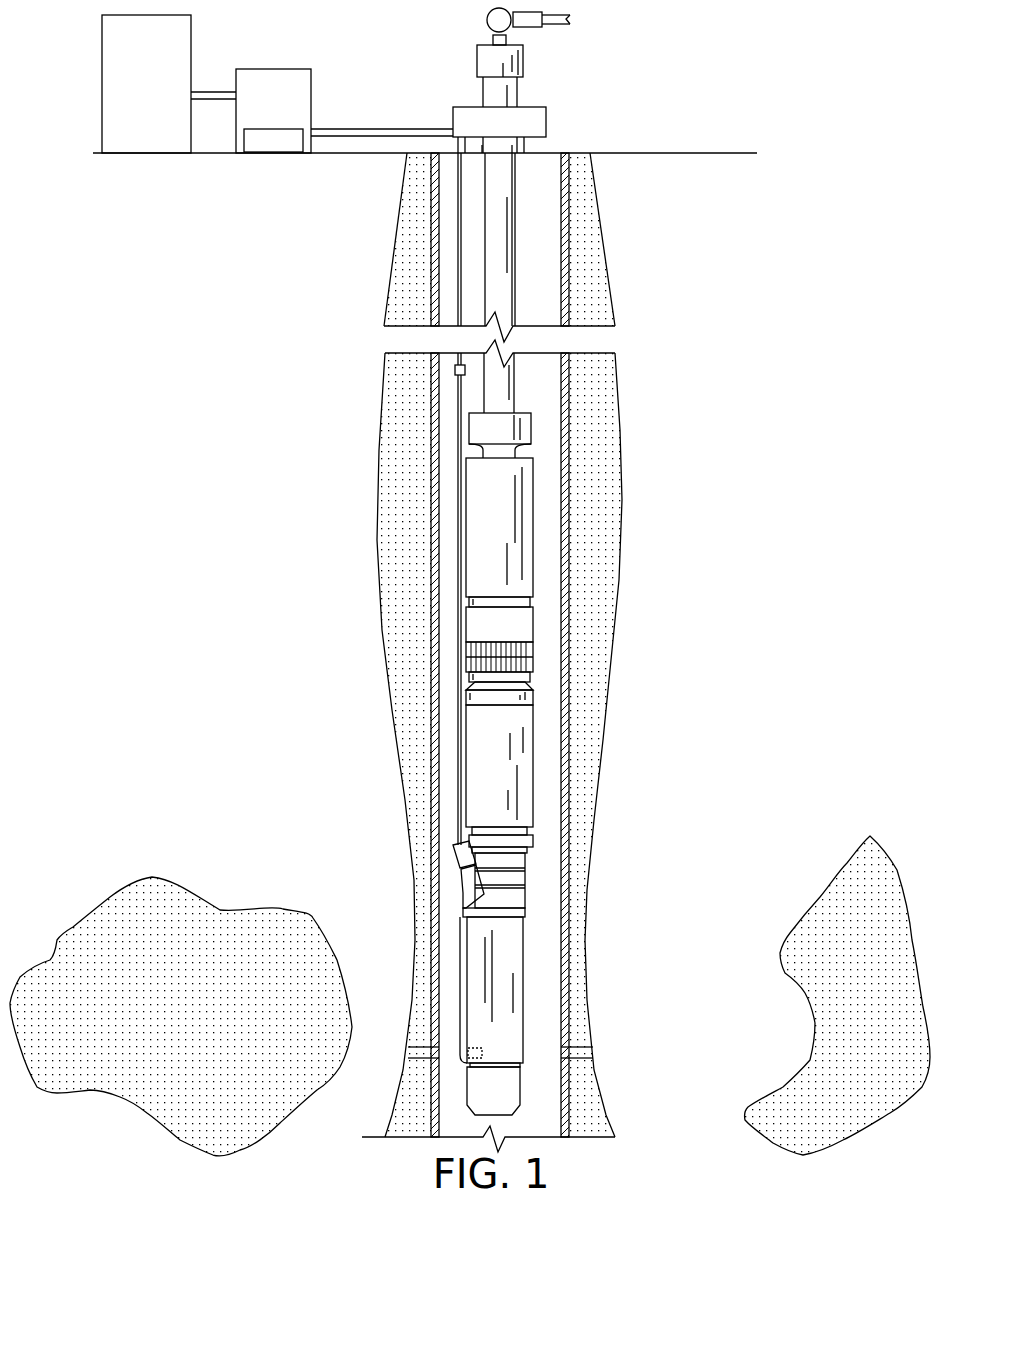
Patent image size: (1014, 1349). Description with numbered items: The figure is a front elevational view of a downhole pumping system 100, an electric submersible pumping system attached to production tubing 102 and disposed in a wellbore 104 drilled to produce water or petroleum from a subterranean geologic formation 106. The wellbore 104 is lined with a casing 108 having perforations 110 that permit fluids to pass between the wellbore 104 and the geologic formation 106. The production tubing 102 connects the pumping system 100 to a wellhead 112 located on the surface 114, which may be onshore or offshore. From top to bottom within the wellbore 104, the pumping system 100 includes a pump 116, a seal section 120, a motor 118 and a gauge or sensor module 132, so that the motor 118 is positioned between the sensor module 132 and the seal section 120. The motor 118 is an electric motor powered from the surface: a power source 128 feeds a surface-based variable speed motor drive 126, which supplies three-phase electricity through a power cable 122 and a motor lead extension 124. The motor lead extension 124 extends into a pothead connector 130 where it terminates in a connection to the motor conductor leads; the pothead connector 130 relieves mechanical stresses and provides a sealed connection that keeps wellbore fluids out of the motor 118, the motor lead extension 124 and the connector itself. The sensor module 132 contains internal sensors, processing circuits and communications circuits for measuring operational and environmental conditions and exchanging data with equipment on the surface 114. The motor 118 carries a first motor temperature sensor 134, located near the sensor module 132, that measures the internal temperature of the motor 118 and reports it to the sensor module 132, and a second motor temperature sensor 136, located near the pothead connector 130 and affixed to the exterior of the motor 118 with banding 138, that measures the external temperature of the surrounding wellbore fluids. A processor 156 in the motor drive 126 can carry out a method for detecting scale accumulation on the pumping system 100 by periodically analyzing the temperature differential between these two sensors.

The downhole pumping system 100 is at (686, 540).
The production tubing 102 is at (503, 297).
The wellbore 104 is at (540, 410).
The subterranean geologic formation 106 is at (164, 1028).
The casing 108 is at (562, 237).
The perforations 110 is at (580, 1030).
The wellhead 112 is at (532, 118).
The surface 114 is at (680, 148).
The pump 116 is at (500, 487).
The motor 118 is at (506, 963).
The seal section 120 is at (528, 783).
The power cable 122 is at (457, 275).
The motor lead extension 124 is at (457, 745).
The motor drive 126 is at (257, 121).
The power source 128 is at (131, 96).
The pothead connector 130 is at (458, 880).
The sensor module 132 is at (515, 1092).
The first motor temperature sensor 134 is at (477, 1048).
The second motor temperature sensor 136 is at (462, 895).
The banding 138 is at (513, 920).
The processor 156 is at (257, 150).